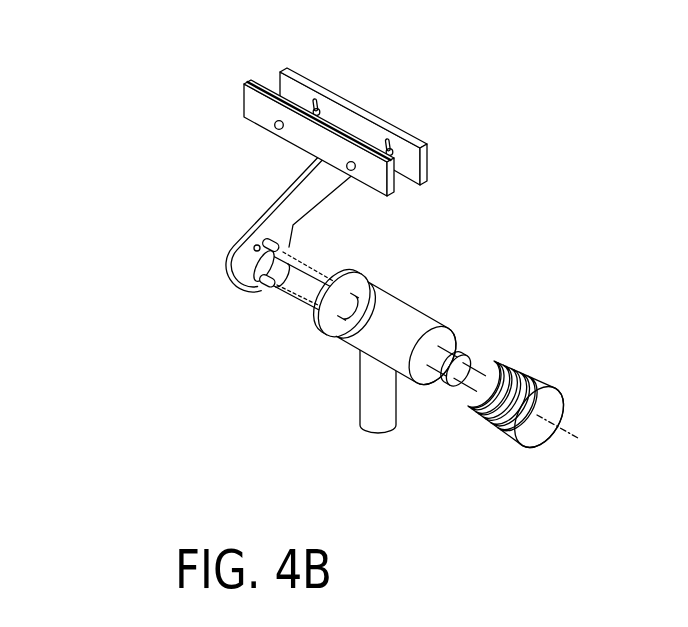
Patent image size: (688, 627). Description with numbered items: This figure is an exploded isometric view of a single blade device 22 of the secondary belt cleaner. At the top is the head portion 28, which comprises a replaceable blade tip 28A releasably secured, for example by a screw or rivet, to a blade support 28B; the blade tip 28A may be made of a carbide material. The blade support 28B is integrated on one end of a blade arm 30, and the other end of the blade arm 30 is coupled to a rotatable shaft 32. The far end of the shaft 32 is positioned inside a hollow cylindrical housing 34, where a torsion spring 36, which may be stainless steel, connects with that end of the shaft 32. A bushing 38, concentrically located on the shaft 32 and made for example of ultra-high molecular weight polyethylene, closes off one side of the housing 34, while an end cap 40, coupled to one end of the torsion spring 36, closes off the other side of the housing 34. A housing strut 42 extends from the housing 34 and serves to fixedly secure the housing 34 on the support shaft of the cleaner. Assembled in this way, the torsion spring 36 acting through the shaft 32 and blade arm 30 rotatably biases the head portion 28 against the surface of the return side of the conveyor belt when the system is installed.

The blade device 22 is at (156, 305).
The head portion 28 is at (260, 150).
The replaceable blade tip 28A is at (244, 97).
The blade support 28B is at (392, 127).
The blade arm 30 is at (268, 209).
The rotatable shaft 32 is at (305, 284).
The hollow cylindrical housing 34 is at (398, 313).
The torsion spring 36 is at (486, 420).
The bushing 38 is at (358, 272).
The end cap 40 is at (533, 433).
The housing strut 42 is at (374, 390).